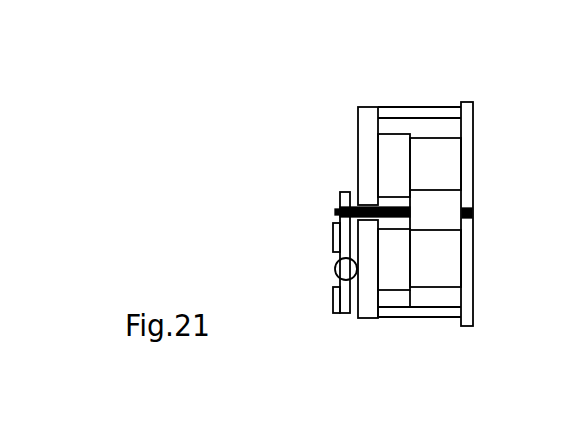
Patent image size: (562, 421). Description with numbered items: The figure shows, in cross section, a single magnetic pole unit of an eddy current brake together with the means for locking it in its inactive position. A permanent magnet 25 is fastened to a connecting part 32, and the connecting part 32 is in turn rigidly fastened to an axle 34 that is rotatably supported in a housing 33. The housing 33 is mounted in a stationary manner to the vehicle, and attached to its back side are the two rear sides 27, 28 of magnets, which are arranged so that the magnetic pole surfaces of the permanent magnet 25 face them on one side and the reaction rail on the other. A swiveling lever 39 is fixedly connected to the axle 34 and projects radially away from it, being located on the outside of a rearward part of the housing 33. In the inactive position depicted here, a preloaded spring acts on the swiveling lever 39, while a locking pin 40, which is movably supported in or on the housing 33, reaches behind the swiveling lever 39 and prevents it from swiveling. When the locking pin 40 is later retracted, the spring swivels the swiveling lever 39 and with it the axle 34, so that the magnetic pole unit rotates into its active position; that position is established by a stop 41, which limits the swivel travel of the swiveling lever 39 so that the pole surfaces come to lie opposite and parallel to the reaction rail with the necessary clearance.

The permanent magnet 25 is at (447, 153).
The rear side of magnet 27 is at (395, 145).
The rear side of magnet 28 is at (397, 262).
The connecting part 32 is at (447, 210).
The housing 33 is at (367, 123).
The axle 34 is at (373, 203).
The swiveling lever 39 is at (345, 253).
The locking pin 40 is at (337, 308).
The stop 41 is at (337, 233).